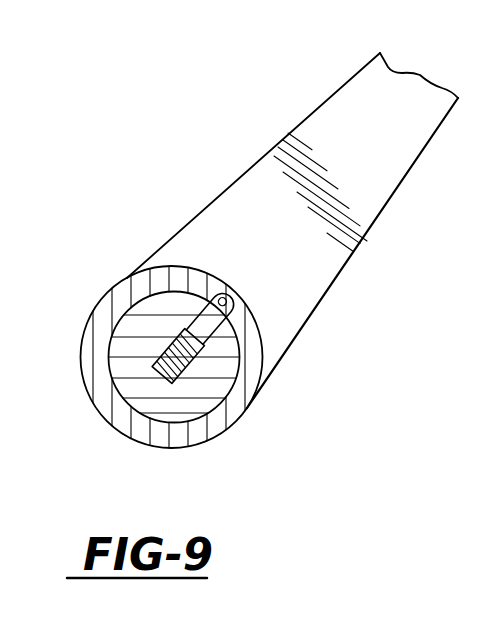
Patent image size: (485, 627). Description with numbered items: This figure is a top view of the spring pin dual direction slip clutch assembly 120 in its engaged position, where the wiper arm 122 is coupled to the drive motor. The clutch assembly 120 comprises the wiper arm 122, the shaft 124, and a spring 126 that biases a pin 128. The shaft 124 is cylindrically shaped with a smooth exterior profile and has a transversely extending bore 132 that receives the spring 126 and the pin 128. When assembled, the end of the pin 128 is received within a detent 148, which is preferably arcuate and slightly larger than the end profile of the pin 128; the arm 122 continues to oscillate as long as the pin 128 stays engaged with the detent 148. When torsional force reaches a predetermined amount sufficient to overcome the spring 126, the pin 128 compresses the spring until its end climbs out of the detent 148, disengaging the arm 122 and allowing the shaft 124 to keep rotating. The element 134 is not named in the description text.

The dual direction slip clutch assembly 120 is at (240, 130).
The wiper arm 122 is at (387, 133).
The shaft 124 is at (145, 403).
The spring 126 is at (225, 399).
The pin 128 is at (205, 320).
The transversely extending bore 132 is at (185, 325).
The outer wall 134 is at (222, 425).
The detent 148 is at (234, 305).